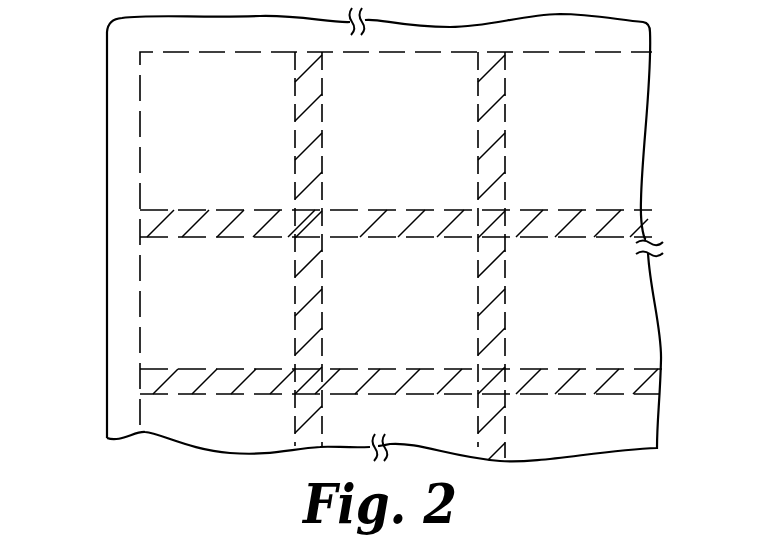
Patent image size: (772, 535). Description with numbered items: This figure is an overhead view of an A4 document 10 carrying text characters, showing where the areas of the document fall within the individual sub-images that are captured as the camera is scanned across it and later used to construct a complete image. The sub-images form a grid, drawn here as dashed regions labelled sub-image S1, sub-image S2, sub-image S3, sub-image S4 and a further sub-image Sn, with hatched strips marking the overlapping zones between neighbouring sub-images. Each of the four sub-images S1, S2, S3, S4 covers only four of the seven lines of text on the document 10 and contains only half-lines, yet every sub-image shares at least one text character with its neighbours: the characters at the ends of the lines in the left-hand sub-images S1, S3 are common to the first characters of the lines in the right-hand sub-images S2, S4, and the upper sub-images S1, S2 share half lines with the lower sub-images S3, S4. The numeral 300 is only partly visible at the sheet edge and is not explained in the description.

The document 10 is at (348, 234).
The sub-image S1 is at (196, 141).
The sub-image S2 is at (377, 141).
The sub-image S3 is at (196, 313).
The sub-image S4 is at (377, 313).
The sub-image Sn is at (554, 141).
The unknown (clipped numeral) 300 is at (666, 531).